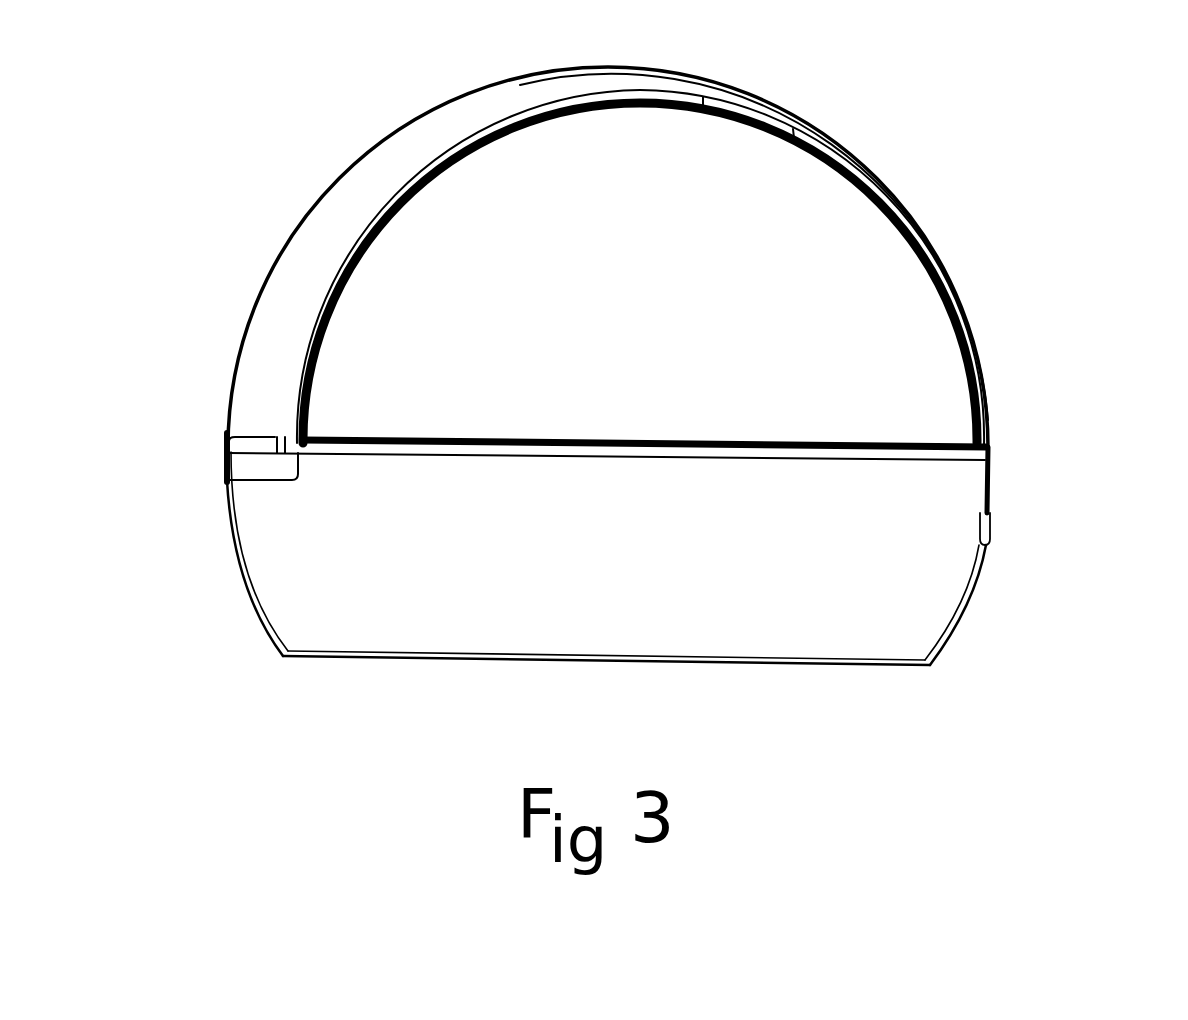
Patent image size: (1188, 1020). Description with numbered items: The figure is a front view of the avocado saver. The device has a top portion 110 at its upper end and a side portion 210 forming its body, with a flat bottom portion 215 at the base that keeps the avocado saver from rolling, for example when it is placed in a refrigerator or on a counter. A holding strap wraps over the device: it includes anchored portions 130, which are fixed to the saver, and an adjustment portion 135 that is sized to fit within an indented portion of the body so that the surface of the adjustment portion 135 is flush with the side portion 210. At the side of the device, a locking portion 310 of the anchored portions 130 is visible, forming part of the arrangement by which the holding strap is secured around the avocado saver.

The top portion 110 is at (435, 437).
The anchored portions of the holding strap 130 is at (337, 227).
The adjustment portion of the holding strap 135 is at (923, 258).
The side portion 210 is at (890, 563).
The flat bottom portion 215 is at (817, 668).
The locking portion of anchored portions 310 is at (270, 441).